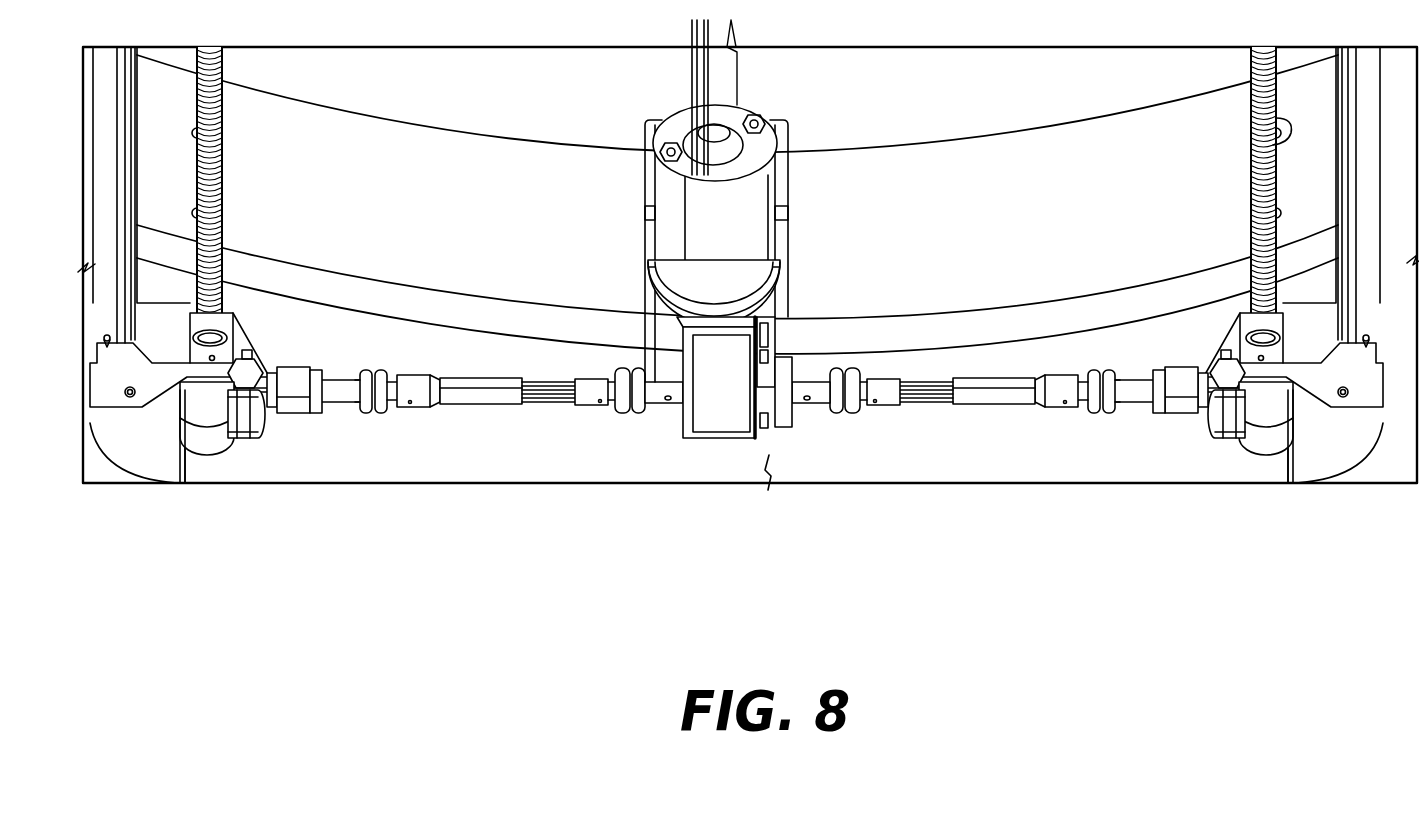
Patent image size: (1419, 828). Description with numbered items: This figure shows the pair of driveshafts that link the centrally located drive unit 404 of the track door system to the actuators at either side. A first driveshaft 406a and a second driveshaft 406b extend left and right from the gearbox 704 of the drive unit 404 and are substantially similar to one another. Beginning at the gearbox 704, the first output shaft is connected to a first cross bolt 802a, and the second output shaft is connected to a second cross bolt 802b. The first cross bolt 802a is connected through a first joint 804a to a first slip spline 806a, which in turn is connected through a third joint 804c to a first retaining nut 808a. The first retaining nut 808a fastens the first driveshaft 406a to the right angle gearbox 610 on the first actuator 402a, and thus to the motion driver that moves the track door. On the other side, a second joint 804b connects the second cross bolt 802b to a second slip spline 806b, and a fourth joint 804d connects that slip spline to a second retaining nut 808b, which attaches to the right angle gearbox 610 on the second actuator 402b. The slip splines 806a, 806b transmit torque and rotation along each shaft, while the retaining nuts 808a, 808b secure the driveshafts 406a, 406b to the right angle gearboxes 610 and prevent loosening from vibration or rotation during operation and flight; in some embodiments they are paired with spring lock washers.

The centrally located drive unit 404 is at (753, 240).
The first actuator 402a is at (112, 375).
The second actuator 402b is at (1342, 253).
The right angle gearbox 610 is at (203, 415).
The first joint 804a is at (622, 393).
The second joint 804b is at (857, 380).
The third joint 804c is at (370, 372).
The fourth joint 804d is at (1103, 384).
The first retaining nut 808a is at (295, 400).
The second retaining nut 808b is at (1173, 407).
The first slip spline 806a is at (462, 385).
The second slip spline 806b is at (1010, 390).
The first cross bolt 802a is at (655, 392).
The second cross bolt 802b is at (807, 387).
The gearbox 704 is at (713, 387).
The first driveshaft 406a is at (456, 457).
The second driveshaft 406b is at (1058, 453).